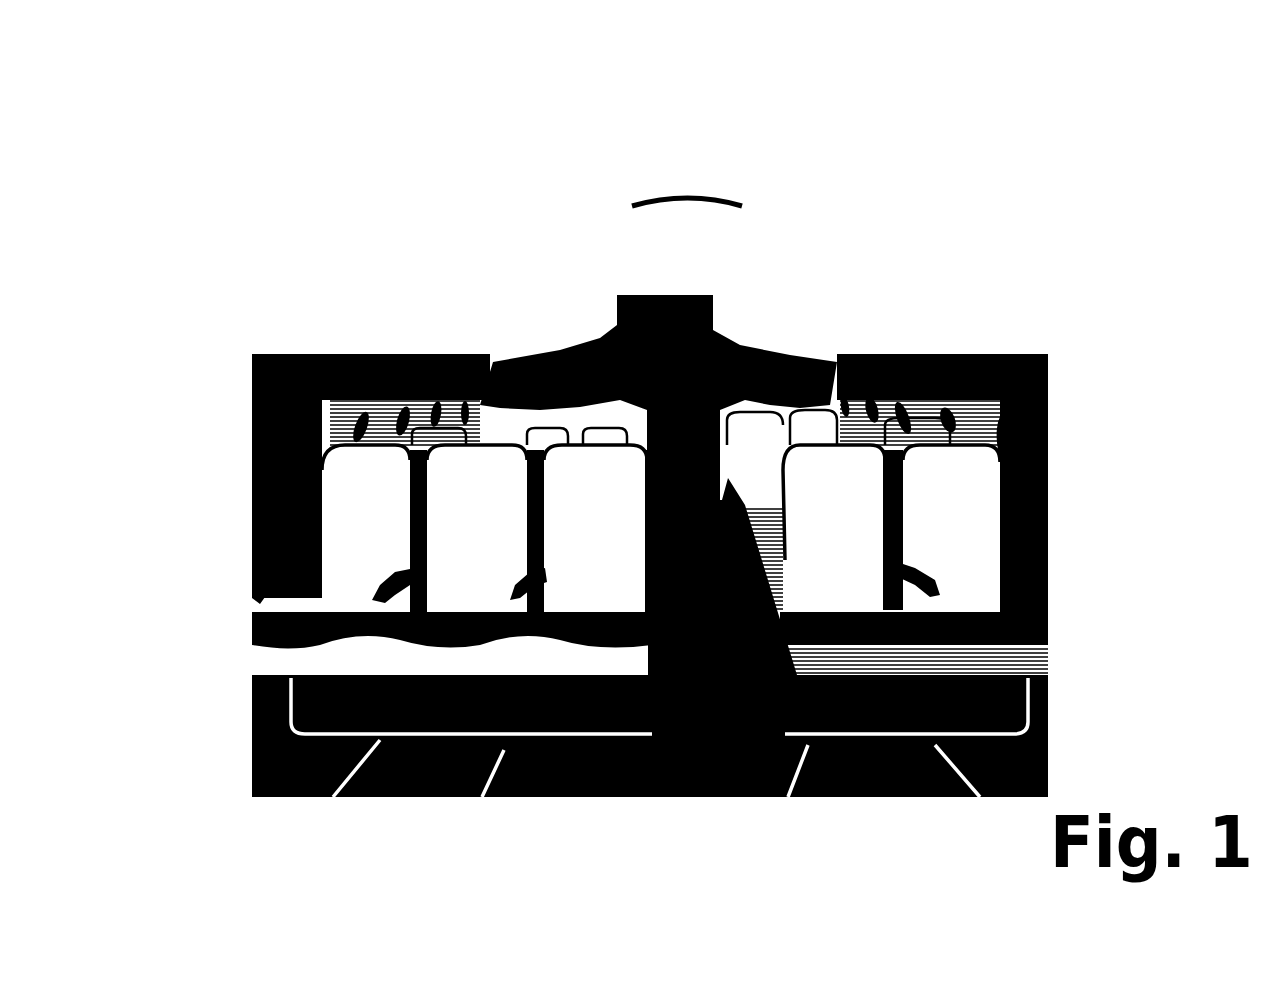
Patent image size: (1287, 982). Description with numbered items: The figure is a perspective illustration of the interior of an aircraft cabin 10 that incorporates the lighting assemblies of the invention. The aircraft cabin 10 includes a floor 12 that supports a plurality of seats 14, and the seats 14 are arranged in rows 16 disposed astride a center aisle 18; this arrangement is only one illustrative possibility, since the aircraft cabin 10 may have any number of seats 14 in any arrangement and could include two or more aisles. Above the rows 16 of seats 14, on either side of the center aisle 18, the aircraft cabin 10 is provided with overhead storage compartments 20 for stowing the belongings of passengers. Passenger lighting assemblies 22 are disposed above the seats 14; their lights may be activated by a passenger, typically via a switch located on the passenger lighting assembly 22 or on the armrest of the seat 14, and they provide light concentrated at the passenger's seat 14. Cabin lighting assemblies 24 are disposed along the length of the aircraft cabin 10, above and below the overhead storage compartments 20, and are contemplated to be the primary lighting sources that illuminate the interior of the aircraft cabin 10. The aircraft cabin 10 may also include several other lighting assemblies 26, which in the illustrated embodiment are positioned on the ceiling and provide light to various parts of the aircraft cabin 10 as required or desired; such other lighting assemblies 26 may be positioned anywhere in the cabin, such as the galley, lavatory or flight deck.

The aircraft cabin 10 is at (1062, 256).
The floor 12 is at (903, 783).
The seats 14 is at (335, 648).
The rows 16 is at (884, 447).
The center aisle 18 is at (647, 807).
The overhead storage compartments 20 is at (367, 260).
The passenger lighting assemblies 22 is at (255, 345).
The cabin lighting assemblies 24 is at (533, 133).
The other lighting assemblies 26 is at (675, 200).